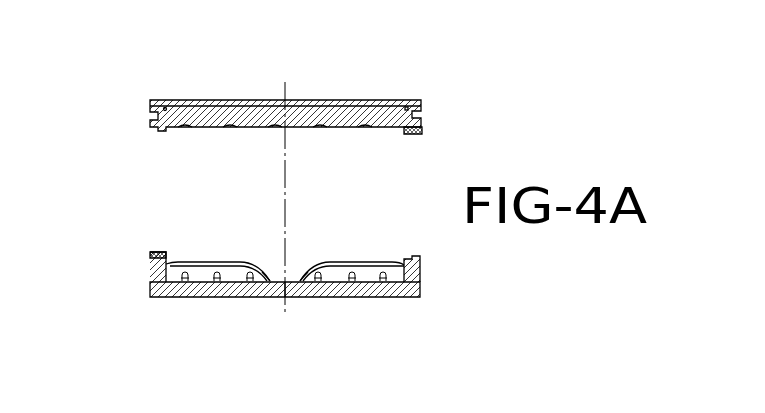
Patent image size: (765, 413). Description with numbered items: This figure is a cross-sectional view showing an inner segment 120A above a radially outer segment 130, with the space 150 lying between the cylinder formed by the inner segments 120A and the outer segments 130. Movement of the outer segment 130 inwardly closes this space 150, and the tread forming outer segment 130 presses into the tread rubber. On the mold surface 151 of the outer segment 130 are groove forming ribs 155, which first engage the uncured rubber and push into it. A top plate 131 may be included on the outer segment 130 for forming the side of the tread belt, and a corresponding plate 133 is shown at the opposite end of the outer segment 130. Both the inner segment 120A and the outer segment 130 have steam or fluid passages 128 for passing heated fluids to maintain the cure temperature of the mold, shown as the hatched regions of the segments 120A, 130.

The inner segment 120A is at (283, 186).
The steam or fluid passages 128 is at (190, 105).
The space 150 is at (176, 186).
The radially outer segment 130 is at (212, 297).
The top plate 131 is at (152, 265).
The right wall 133 is at (420, 267).
The groove forming ribs 155 is at (237, 274).
The mold surface 151 is at (292, 278).